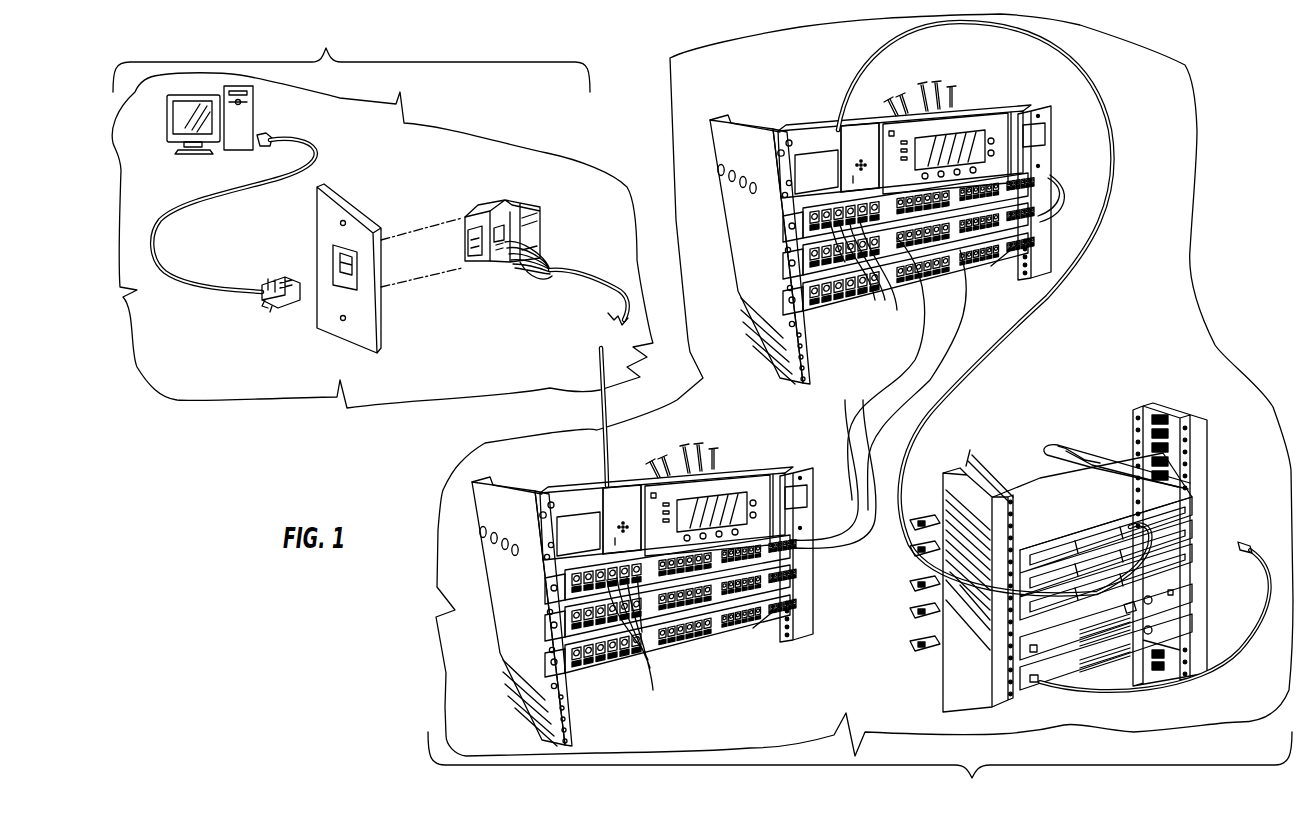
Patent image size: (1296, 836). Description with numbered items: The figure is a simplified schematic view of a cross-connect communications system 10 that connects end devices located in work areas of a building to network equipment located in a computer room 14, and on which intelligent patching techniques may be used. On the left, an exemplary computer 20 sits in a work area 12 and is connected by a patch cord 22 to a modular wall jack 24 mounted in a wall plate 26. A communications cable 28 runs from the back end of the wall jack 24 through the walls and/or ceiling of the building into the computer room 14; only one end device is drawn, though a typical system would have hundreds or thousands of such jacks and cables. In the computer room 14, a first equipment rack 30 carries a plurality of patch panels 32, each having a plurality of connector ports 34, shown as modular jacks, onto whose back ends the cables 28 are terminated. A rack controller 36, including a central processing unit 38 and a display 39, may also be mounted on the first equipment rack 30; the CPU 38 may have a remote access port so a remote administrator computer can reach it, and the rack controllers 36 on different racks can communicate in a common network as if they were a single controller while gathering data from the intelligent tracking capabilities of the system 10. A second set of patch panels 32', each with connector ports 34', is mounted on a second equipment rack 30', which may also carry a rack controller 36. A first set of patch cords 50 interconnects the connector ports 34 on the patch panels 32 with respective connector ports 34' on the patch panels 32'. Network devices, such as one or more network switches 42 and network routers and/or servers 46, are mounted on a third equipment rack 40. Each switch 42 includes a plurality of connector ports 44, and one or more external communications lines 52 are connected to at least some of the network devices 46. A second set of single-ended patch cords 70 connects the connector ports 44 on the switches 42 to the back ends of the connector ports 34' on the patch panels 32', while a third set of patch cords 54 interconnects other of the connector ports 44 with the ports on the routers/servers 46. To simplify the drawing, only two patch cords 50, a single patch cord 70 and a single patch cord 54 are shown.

The cross-connect communications system 10 is at (1240, 60).
The work area 12 is at (382, 213).
The computer room 14 is at (860, 407).
The computer 20 is at (253, 105).
The patch cord 22 is at (158, 242).
The modular wall jack 24 is at (490, 211).
The wall plate 26 is at (380, 330).
The communications cable 28 is at (580, 286).
The first equipment rack 30 is at (623, 607).
The second equipment rack 30' is at (867, 245).
The patch panel 32 is at (833, 474).
The patch panel 32' is at (1064, 176).
The connector port 34 is at (670, 627).
The connector port 34' is at (908, 260).
The rack controller 36 is at (760, 478).
The central processing unit 38 is at (620, 507).
The display 39 is at (687, 506).
The third equipment rack 40 is at (1200, 446).
The network switch 42 is at (1193, 540).
The connector port 44 is at (1064, 553).
The network router and/or server 46 is at (1017, 682).
The first set of patch cords 50 is at (855, 412).
The external communications line 52 is at (985, 452).
The third set of patch cords 54 is at (1270, 642).
The second set of single-ended patch cords 70 is at (1113, 205).